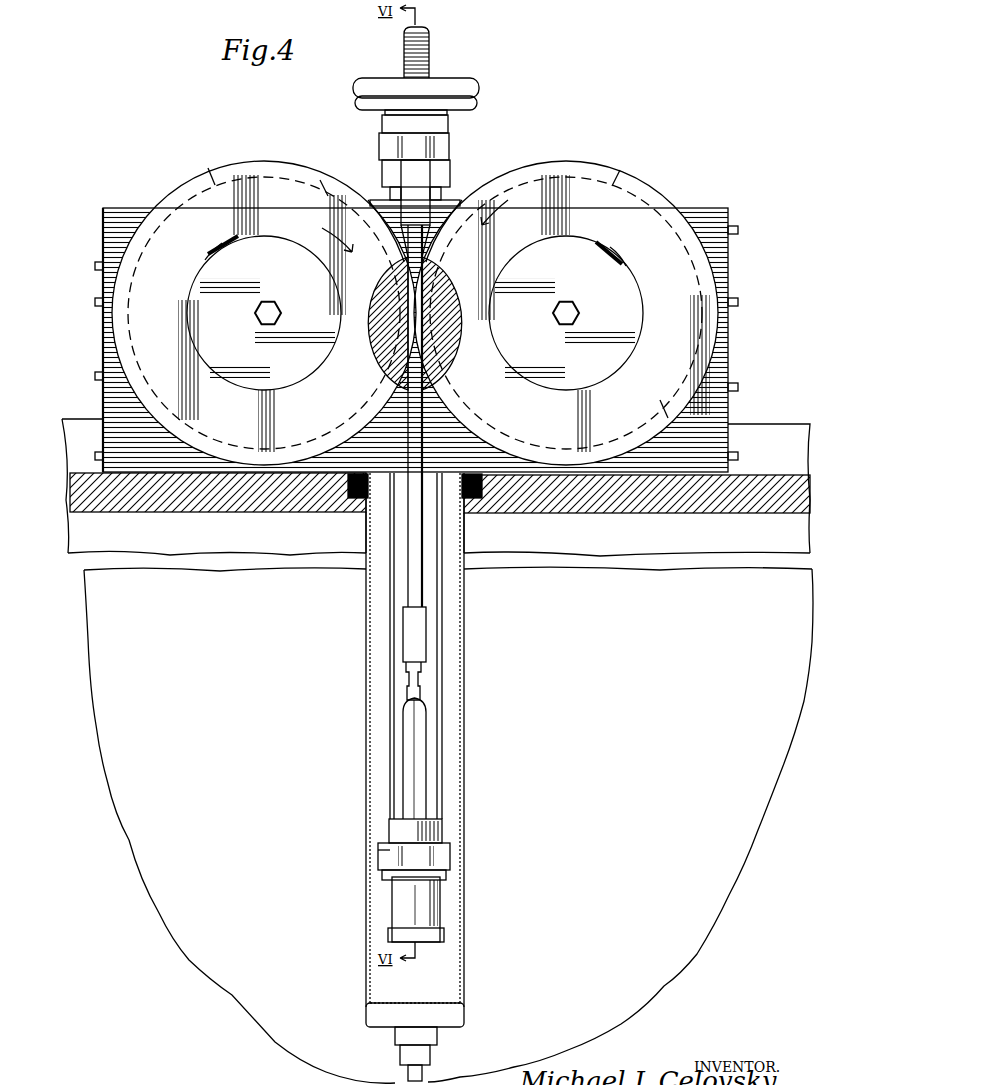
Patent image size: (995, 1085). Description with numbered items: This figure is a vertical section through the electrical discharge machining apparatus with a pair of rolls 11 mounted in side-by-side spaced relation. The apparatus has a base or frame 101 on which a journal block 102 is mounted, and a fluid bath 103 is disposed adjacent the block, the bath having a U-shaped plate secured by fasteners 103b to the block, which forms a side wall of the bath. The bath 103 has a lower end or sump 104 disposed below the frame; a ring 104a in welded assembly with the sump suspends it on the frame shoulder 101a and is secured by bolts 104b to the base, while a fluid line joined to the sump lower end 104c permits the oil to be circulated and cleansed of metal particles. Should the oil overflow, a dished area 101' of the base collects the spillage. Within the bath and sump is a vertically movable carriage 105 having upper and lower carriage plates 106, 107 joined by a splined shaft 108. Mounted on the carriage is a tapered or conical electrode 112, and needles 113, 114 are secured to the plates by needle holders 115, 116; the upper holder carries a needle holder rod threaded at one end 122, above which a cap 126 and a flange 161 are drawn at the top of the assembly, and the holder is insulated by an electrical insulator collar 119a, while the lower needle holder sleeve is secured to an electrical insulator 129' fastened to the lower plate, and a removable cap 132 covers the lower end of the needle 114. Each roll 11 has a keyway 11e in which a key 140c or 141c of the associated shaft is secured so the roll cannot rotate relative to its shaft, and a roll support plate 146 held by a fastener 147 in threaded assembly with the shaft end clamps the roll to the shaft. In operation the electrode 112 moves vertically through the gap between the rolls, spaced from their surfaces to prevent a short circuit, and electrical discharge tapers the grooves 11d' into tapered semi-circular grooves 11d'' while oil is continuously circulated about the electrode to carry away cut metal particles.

The roll 11 is at (263, 170).
The arcuate tapered groove 11d'' is at (415, 298).
The groove 11d' is at (418, 295).
The keyway 11e is at (232, 238).
The key 140c is at (224, 250).
The key 141c is at (614, 258).
The roll support plate 146 is at (415, 313).
The fastener 147 is at (272, 300).
The frame 101 is at (424, 493).
The dished area 101' is at (437, 734).
The frame shoulder 101a is at (480, 516).
The journal block 102 is at (118, 390).
The fluid bath 103 is at (152, 210).
The fastener 103b is at (738, 302).
The sump 104 is at (465, 636).
The ring 104a is at (358, 498).
The bolt 104b is at (490, 500).
The sump lower end 104c is at (426, 1074).
The carriage 105 is at (374, 153).
The upper carriage plate 106 is at (440, 150).
The lower carriage plate 107 is at (452, 860).
The splined shaft 108 is at (440, 792).
The electrode 112 is at (408, 426).
The needle 113 is at (424, 290).
The needle 114 is at (418, 758).
The needle holder 115 is at (432, 178).
The needle holder 116 is at (442, 834).
The electrical insulator collar 119a is at (382, 126).
The threaded end 122 is at (428, 72).
The cap 126 is at (476, 90).
The cap flange 161 is at (478, 106).
The electrical insulator 129' is at (354, 865).
The removable cap 132 is at (440, 916).